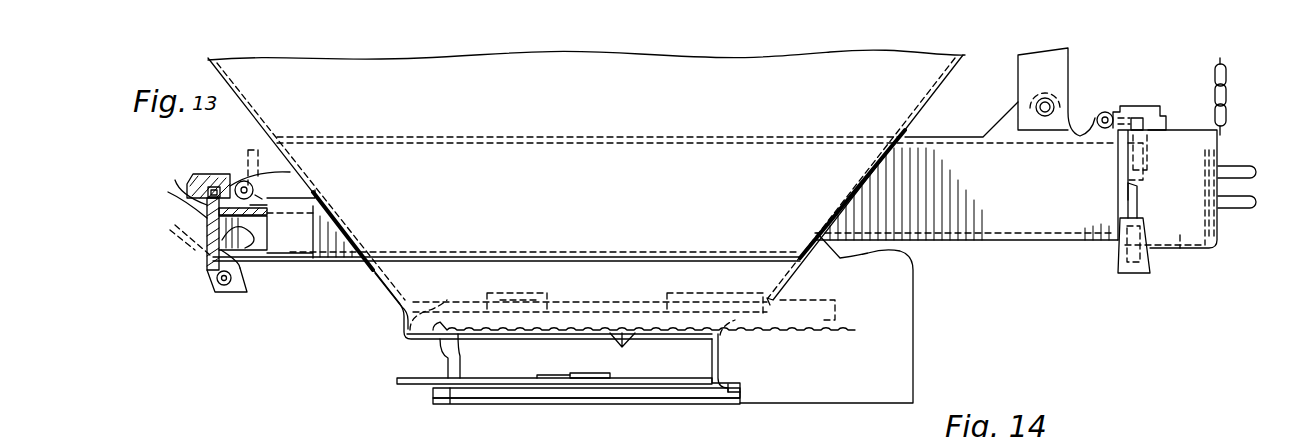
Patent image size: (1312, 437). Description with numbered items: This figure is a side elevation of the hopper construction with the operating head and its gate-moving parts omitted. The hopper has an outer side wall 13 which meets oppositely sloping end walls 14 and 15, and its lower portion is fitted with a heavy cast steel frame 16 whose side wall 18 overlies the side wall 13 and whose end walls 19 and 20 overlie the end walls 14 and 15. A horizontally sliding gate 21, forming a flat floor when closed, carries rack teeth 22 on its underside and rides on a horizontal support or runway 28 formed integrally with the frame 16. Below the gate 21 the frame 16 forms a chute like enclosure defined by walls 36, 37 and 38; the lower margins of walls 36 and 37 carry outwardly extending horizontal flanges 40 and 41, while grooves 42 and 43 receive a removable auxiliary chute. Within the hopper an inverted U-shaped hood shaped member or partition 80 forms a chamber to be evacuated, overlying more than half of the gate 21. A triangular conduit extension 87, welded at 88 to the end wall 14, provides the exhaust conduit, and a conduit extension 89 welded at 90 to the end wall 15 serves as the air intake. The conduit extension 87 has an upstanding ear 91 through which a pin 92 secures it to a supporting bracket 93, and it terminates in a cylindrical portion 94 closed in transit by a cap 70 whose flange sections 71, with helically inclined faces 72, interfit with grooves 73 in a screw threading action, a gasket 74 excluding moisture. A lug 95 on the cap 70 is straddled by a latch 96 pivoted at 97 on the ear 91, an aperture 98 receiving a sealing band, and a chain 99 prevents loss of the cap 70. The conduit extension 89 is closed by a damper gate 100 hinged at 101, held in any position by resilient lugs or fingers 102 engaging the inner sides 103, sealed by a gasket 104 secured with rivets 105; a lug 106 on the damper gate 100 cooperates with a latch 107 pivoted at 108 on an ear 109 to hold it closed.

The outer side wall 13 is at (634, 95).
The end wall 14 is at (948, 70).
The end wall 15 is at (212, 64).
The frame 16 is at (382, 347).
The side wall 18 is at (651, 262).
The end wall 19 is at (800, 273).
The end wall 20 is at (380, 292).
The horizontally sliding gate 21 is at (577, 306).
The rack teeth 22 is at (622, 350).
The support or runway 28 is at (435, 312).
The wall 36 is at (446, 353).
The wall 37 is at (528, 386).
The wall 38 is at (722, 365).
The horizontal flange 40 is at (403, 386).
The horizontal flange 41 is at (583, 384).
The groove 42 is at (731, 392).
The groove 43 is at (483, 396).
The cap 70 is at (1180, 130).
The flange sections 71 is at (1137, 194).
The inclined face 72 is at (1145, 150).
The grooves 73 is at (1130, 273).
The gasket 74 is at (1212, 152).
The hood shaped member or partition 80 is at (759, 130).
The conduit extension 87 is at (1021, 260).
The weld 88 is at (896, 164).
The conduit extension 89 is at (302, 274).
The weld 90 is at (322, 193).
The upstanding ear 91 is at (998, 121).
The pin 92 is at (1048, 104).
The bracket 93 is at (1036, 57).
The cylindrical portion 94 is at (1181, 250).
The lug 95 is at (1133, 108).
The latch 96 is at (1157, 108).
The pivot 97 is at (1099, 114).
The aperture 98 is at (1139, 112).
The chain 99 is at (1232, 82).
The damper gate 100 is at (168, 192).
The hinge 101 is at (234, 284).
The resilient lugs or fingers 102 is at (246, 256).
The inner sides 103 is at (255, 226).
The gasket 104 is at (175, 180).
The rivets 105 is at (207, 236).
The lug 106 is at (236, 181).
The latch 107 is at (199, 176).
The pivot 108 is at (290, 172).
The ear 109 is at (258, 196).